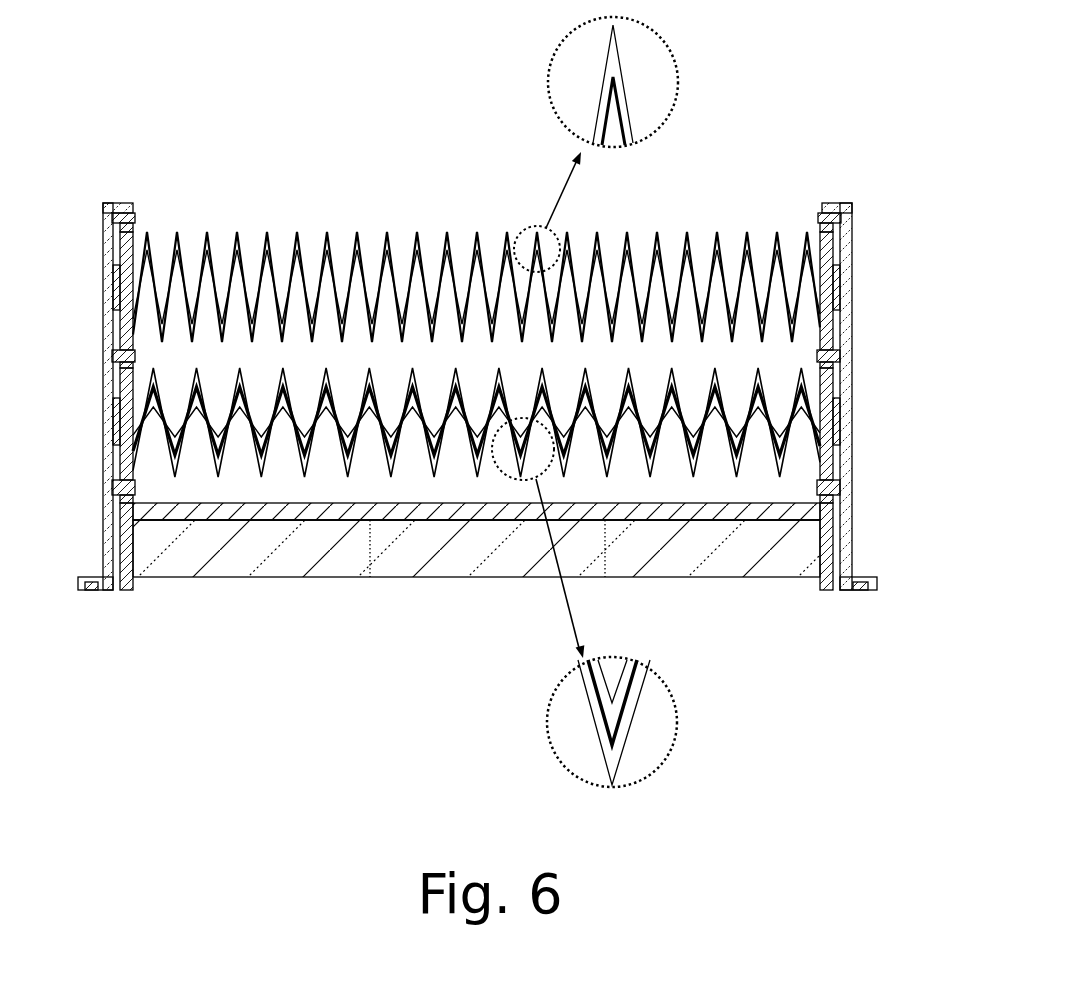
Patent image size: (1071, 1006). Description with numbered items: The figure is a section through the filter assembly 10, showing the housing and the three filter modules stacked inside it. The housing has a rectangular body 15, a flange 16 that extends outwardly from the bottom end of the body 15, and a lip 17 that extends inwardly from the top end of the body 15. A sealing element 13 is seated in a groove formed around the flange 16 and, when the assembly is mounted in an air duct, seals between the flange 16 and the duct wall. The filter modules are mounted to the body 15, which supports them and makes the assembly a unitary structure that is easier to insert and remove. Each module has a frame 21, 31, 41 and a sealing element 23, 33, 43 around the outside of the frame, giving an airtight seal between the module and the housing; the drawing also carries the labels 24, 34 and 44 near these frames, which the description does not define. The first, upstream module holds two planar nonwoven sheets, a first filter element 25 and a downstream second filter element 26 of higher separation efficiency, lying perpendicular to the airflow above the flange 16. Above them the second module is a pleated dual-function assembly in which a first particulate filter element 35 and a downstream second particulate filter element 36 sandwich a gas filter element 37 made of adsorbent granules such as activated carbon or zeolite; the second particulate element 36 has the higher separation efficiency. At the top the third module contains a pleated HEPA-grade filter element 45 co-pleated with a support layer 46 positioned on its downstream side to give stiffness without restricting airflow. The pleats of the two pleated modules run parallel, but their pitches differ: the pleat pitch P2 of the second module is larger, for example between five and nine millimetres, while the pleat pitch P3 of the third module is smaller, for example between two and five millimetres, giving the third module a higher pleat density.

The filter assembly 10 is at (190, 140).
The sealing element 13 is at (860, 590).
The rectangular body 15 is at (852, 312).
The flange 16 is at (878, 578).
The lip 17 is at (840, 205).
The frame 21 is at (825, 512).
The sealing element 23 is at (120, 542).
The lower connector block 24 is at (120, 488).
The first filter element 25 is at (153, 553).
The second filter element 26 is at (200, 522).
The frame 31 is at (826, 383).
The sealing element 33 is at (120, 413).
The middle connector block 34 is at (120, 357).
The first particulate filter element 35 is at (618, 768).
The second particulate filter element 36 is at (618, 683).
The gas filter element 37 is at (618, 728).
The frame 41 is at (826, 250).
The sealing element 43 is at (118, 287).
The upper connector block 44 is at (118, 217).
The filter element 45 is at (620, 110).
The support layer 46 is at (617, 55).
The pleat pitch of the second filter module P2 is at (327, 338).
The pleat pitch of the third filter module P3 is at (357, 227).